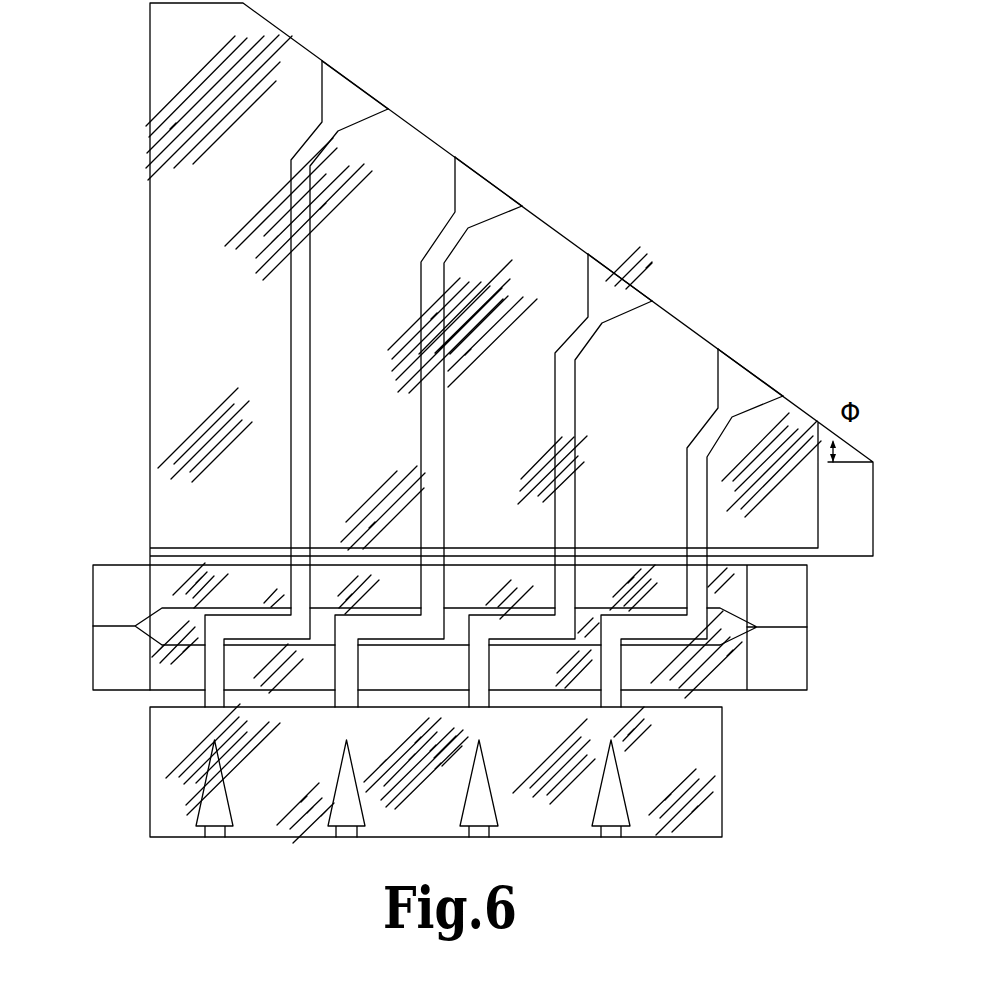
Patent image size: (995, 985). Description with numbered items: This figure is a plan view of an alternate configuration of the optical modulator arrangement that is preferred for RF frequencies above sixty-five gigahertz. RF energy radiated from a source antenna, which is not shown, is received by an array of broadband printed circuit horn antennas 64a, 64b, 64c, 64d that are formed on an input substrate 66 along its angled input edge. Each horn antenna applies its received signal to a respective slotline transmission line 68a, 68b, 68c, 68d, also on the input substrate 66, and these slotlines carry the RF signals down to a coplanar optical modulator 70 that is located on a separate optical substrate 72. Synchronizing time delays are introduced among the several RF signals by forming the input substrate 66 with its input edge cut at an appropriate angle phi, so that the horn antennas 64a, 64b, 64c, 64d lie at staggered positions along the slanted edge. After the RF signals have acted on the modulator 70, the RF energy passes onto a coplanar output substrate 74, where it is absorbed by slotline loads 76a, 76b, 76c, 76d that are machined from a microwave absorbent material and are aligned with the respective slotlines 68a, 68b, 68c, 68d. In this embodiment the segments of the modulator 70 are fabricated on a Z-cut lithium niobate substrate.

The input substrate 66 is at (148, 272).
The broadband printed circuit horn antenna 64a is at (748, 387).
The broadband printed circuit horn antenna 64b is at (620, 293).
The broadband printed circuit horn antenna 64c is at (490, 197).
The broadband printed circuit horn antenna 64d is at (362, 102).
The slotline transmission line 68a is at (688, 480).
The slotline transmission line 68b is at (553, 447).
The slotline transmission line 68c is at (418, 412).
The slotline transmission line 68d is at (288, 385).
The coplanar optical modulator 70 is at (640, 660).
The optical substrate 72 is at (103, 565).
The coplanar output substrate 74 is at (148, 768).
The slotline load 76a is at (628, 813).
The slotline load 76b is at (498, 807).
The slotline load 76c is at (328, 808).
The slotline load 76d is at (200, 805).